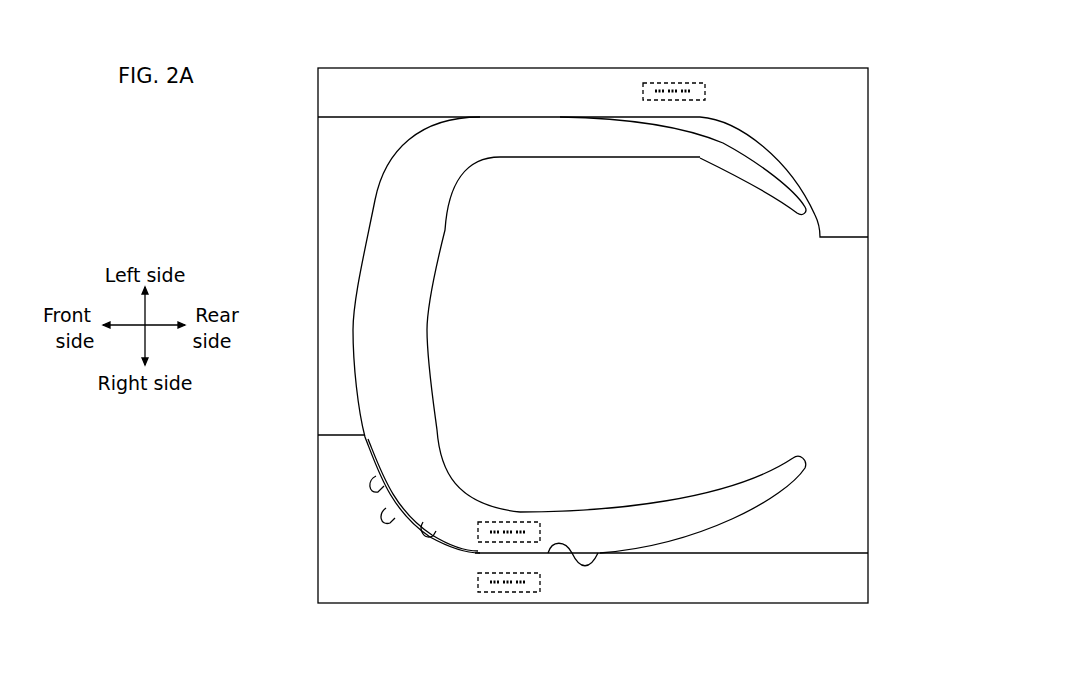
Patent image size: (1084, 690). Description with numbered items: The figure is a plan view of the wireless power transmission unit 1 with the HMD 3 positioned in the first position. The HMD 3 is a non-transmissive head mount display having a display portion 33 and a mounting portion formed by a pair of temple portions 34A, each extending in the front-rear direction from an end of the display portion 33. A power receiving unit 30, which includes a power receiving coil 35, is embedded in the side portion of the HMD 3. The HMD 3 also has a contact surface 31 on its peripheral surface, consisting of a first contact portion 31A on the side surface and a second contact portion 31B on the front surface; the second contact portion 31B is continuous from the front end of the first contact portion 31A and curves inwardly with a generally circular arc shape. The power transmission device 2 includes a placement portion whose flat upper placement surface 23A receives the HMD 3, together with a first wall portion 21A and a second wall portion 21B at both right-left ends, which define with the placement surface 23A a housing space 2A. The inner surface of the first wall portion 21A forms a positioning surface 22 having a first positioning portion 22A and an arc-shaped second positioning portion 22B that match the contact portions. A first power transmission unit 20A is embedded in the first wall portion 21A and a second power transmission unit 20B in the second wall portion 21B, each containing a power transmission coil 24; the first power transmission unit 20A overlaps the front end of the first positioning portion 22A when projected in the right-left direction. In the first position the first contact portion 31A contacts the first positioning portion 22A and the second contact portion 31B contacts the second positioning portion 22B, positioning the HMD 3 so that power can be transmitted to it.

The image forming apparatus 1 is at (567, 656).
The power transmission device 2 is at (316, 214).
The housing space 2A is at (740, 325).
The HMD 3 is at (430, 327).
The first power transmission unit 20A is at (509, 596).
The second power transmission unit 20B is at (671, 80).
The first wall portion 21A is at (316, 533).
The second wall portion 21B is at (470, 64).
The positioning surface 22 is at (760, 142).
The first positioning portion 22A is at (572, 557).
The second positioning portion 22B is at (367, 450).
The placement surface 23A is at (830, 407).
The power transmission coil 24 is at (690, 90).
The power receiving unit 30 is at (515, 515).
The contact surface 31 is at (389, 518).
The first contact portion 31A is at (588, 566).
The second contact portion 31B is at (376, 482).
The display portion 33 is at (413, 275).
The temple portion 34A is at (688, 153).
The power receiving coil 35 is at (492, 542).